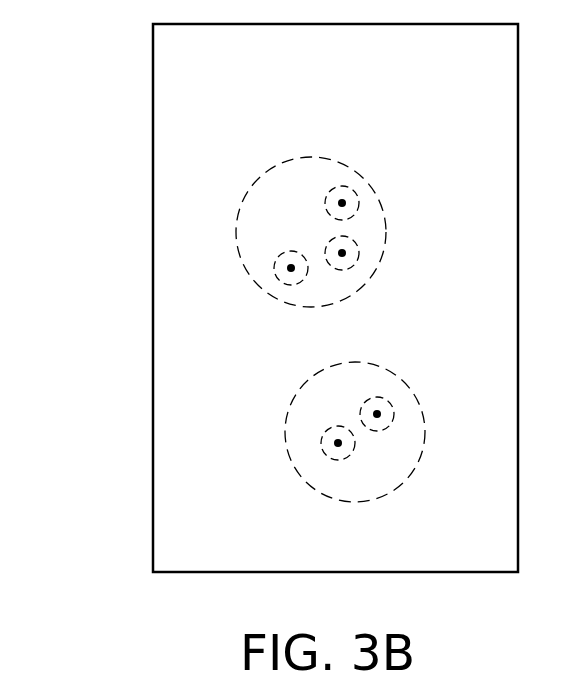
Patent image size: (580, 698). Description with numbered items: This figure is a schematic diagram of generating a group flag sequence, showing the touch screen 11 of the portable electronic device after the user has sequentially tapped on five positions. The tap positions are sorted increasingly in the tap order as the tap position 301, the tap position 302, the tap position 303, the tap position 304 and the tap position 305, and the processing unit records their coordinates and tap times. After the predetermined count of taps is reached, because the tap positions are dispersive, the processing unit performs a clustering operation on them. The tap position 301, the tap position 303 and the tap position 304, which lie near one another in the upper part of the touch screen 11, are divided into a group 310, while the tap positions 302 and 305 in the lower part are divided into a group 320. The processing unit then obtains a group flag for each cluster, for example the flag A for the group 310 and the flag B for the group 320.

The touch screen 11 is at (153, 387).
The group 310 is at (286, 160).
The group 320 is at (355, 502).
The tap position 301 is at (291, 268).
The tap position 302 is at (377, 414).
The tap position 303 is at (342, 253).
The tap position 304 is at (342, 203).
The tap position 305 is at (338, 443).